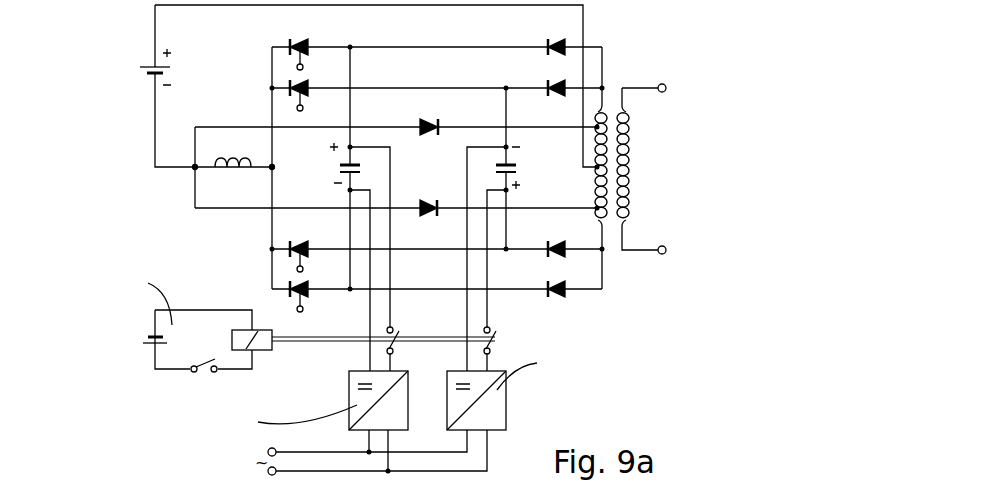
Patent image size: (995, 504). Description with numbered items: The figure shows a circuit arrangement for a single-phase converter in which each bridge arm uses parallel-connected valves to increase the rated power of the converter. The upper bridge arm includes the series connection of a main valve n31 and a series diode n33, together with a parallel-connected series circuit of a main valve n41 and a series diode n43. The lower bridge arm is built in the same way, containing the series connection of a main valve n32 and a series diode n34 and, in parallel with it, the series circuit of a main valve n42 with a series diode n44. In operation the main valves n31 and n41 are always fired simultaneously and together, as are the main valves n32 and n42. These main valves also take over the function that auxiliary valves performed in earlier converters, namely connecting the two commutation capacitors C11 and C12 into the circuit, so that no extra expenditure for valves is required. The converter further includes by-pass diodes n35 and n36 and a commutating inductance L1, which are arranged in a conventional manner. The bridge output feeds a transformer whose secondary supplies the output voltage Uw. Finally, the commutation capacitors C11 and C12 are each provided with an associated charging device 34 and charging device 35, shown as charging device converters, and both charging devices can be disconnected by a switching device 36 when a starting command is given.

The main valve n31 is at (309, 44).
The main valve n41 is at (309, 85).
The series diode n33 is at (549, 42).
The series diode n43 is at (549, 83).
The main valve n32 is at (318, 238).
The main valve n42 is at (318, 285).
The series diode n34 is at (549, 244).
The series diode n44 is at (549, 285).
The by-pass diode n35 is at (420, 120).
The by-pass diode n36 is at (420, 213).
The commutation capacitor C11 is at (340, 165).
The commutation capacitor C12 is at (516, 165).
The commutating inductance L1 is at (241, 160).
The switching device 36 is at (219, 345).
The charging device 34 is at (349, 399).
The charging device 35 is at (541, 387).
The output voltage Uw is at (664, 103).